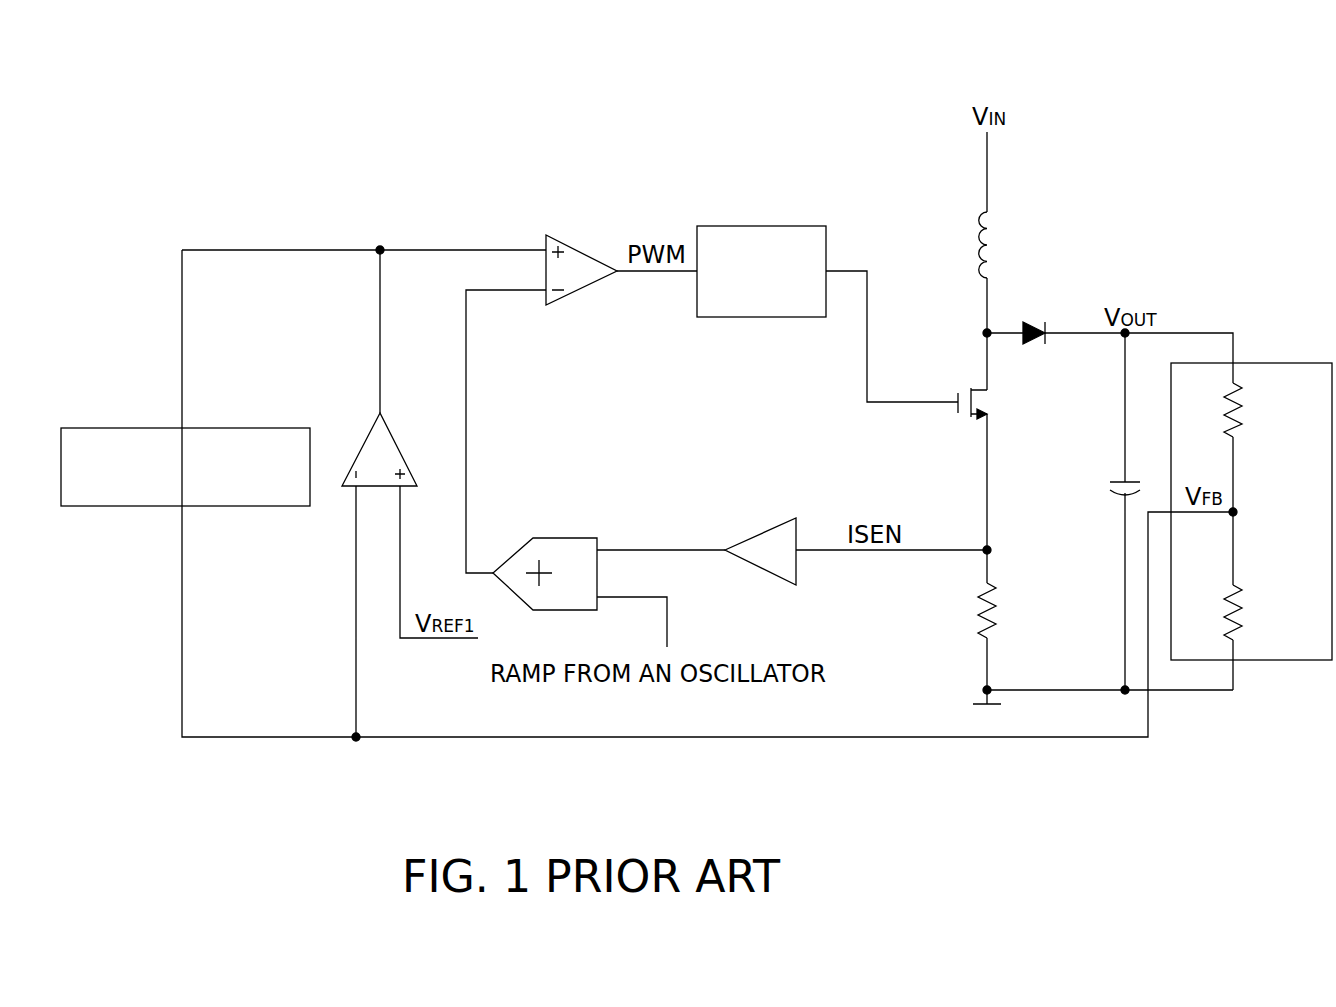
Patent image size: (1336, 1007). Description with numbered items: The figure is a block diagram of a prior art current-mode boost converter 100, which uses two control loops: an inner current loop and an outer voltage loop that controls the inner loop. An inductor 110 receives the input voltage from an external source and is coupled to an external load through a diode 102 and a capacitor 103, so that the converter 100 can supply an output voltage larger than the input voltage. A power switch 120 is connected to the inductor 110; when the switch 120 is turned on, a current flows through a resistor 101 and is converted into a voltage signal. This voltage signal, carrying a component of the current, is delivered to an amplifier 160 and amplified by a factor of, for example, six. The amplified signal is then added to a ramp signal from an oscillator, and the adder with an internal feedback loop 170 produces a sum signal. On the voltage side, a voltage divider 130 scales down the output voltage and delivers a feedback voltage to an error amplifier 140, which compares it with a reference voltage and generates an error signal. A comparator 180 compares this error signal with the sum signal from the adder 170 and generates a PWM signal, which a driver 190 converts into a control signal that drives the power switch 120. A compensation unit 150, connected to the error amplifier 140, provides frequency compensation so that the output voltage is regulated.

The current-mode boost converter 100 is at (166, 126).
The resistor 101 is at (997, 587).
The diode 102 is at (1034, 326).
The capacitor 103 is at (1115, 480).
The inductor 110 is at (984, 242).
The power switch 120 is at (979, 412).
The voltage divider 130 is at (1274, 363).
The error amplifier 140 is at (388, 426).
The compensation unit 150 is at (112, 428).
The amplifier 160 is at (785, 522).
The adder with an internal feedback loop 170 is at (566, 538).
The comparator 180 is at (566, 248).
The driver 190 is at (828, 250).